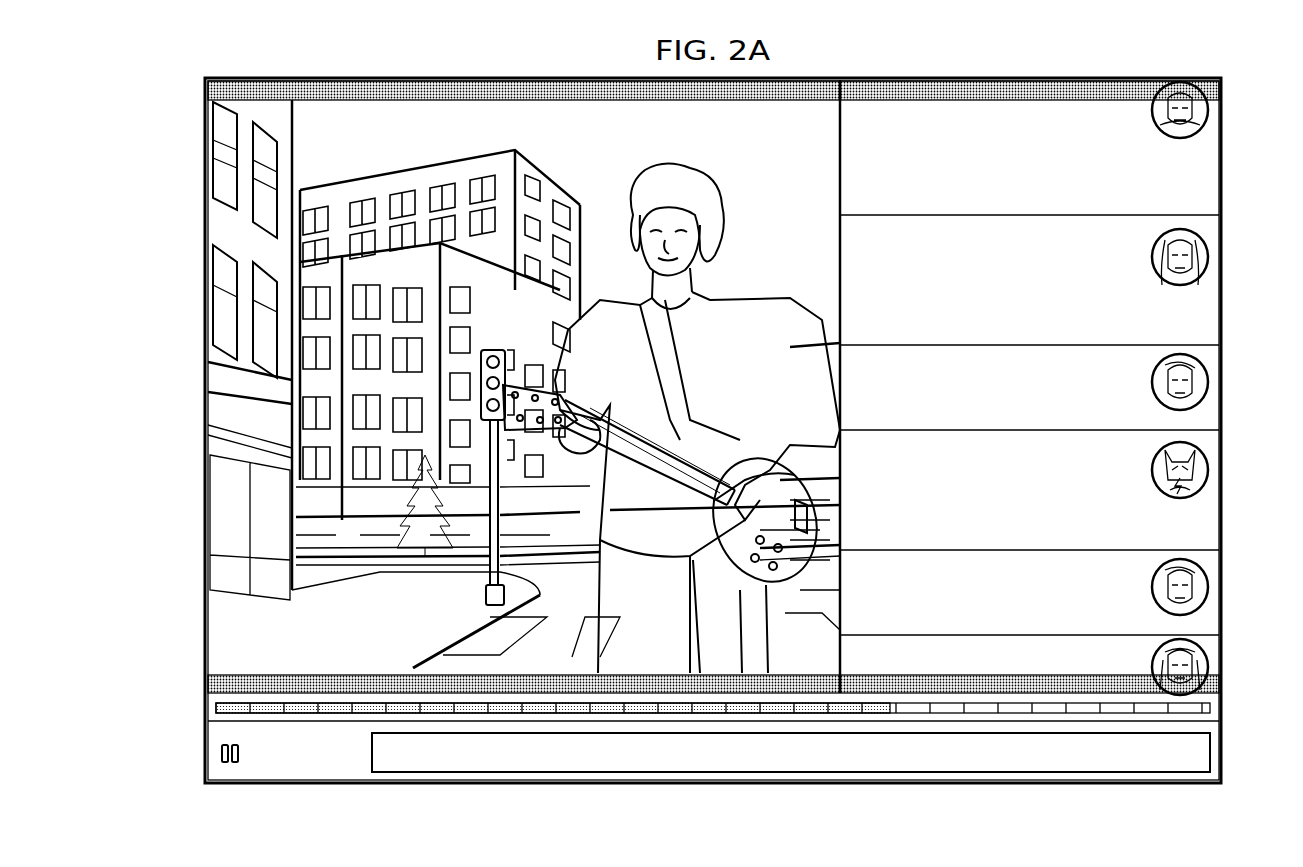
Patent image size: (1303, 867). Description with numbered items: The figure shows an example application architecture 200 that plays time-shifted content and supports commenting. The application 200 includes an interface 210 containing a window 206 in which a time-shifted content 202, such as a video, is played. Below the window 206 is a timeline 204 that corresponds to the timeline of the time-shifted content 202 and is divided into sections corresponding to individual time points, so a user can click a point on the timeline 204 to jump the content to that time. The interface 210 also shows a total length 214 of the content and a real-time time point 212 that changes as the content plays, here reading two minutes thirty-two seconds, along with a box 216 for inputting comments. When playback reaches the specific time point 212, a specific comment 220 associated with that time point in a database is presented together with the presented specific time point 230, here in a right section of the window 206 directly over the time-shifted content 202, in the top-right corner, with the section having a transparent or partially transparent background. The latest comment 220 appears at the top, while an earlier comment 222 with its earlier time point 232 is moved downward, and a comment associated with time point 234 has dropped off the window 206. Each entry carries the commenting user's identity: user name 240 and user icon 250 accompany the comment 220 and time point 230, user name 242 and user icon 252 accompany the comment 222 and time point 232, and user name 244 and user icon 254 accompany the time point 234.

The application architecture 200 is at (186, 68).
The time-shifted content 202 is at (790, 171).
The timeline 204 is at (1212, 708).
The window 206 is at (508, 88).
The interface 210 is at (283, 77).
The real-time time point 212 is at (272, 780).
The total length 214 is at (332, 780).
The box 216 is at (792, 768).
The specific comment 220 is at (1035, 157).
The earlier comment 222 is at (980, 282).
The presented specific time point 230 is at (1071, 351).
The time point 232 is at (1100, 262).
The time point 234 is at (1075, 668).
The user name 240 is at (885, 80).
The user name 242 is at (948, 248).
The user name 244 is at (920, 668).
The user icon 250 is at (1210, 104).
The user icon 252 is at (1210, 253).
The user icon 254 is at (1210, 660).